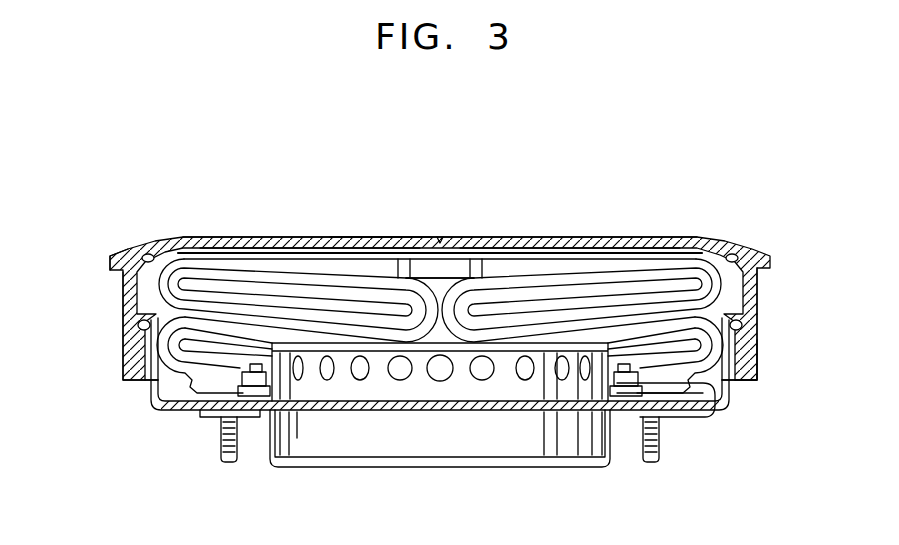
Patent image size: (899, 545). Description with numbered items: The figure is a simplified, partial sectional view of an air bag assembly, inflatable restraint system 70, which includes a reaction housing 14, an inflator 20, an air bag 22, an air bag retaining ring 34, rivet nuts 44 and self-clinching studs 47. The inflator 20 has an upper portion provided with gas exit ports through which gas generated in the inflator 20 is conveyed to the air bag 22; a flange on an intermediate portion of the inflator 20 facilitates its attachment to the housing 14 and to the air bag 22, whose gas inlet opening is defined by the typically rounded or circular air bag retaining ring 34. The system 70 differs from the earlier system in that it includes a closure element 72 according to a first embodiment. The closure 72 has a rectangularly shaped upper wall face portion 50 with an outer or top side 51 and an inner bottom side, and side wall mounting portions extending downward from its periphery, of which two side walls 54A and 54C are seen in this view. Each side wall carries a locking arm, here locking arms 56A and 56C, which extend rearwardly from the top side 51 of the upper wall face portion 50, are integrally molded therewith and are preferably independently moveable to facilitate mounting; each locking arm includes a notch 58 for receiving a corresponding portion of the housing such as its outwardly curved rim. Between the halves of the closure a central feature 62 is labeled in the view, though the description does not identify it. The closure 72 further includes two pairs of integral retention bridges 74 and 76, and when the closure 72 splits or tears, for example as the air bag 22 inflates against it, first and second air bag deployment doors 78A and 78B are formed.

The housing 14 is at (157, 392).
The inflator 20 is at (362, 437).
The air bag 22 is at (186, 254).
The air bag retaining ring 34 is at (614, 402).
The rivet nuts 44 is at (668, 414).
The self-clinching studs 47 is at (222, 450).
The upper wall face portion 50 is at (220, 237).
The top side 51 is at (367, 237).
The side wall 54A is at (126, 285).
The side wall 54C is at (758, 283).
The locking arm 56A is at (126, 320).
The locking arm 56C is at (759, 322).
The notch 58 is at (758, 365).
The connecting stem / junction 62 is at (441, 259).
The air bag assembly, inflatable restraint system 70 is at (757, 230).
The closure element 72 is at (110, 254).
The retention bridges 74 is at (147, 252).
The retention bridges 76 is at (735, 253).
The first air bag deployment door 78A is at (300, 237).
The second air bag deployment door 78B is at (577, 237).